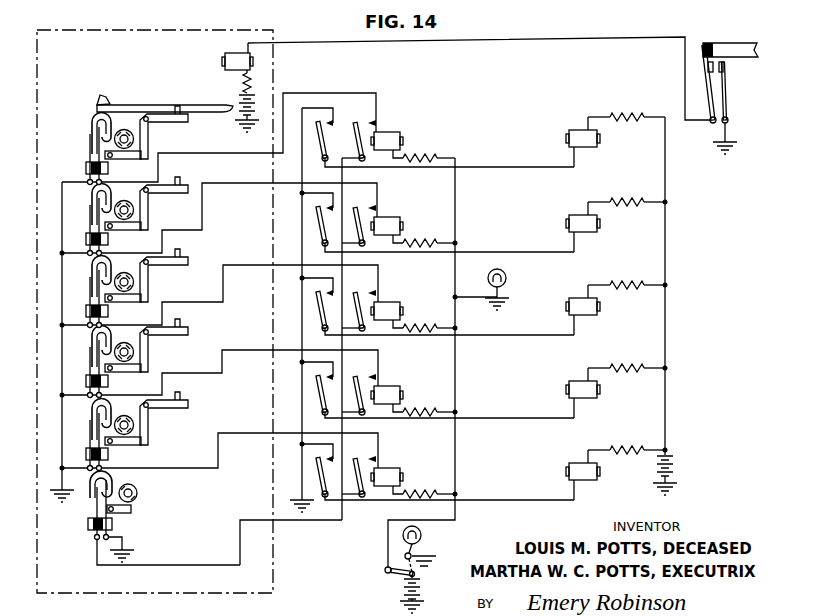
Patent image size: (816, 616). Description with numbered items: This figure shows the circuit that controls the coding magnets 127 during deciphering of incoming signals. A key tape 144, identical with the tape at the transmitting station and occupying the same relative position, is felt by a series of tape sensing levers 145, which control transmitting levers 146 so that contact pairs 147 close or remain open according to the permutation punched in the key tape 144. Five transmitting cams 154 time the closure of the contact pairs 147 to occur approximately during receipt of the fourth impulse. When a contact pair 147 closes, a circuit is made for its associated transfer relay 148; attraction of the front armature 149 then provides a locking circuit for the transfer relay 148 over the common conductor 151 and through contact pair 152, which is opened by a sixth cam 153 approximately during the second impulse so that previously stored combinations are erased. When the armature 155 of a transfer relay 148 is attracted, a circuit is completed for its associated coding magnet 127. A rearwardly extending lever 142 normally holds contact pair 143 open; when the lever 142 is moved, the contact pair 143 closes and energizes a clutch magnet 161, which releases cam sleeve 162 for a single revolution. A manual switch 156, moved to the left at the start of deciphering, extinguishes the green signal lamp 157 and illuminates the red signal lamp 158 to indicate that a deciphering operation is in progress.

The coding magnet 127 is at (578, 132).
The rearwardly extending lever 142 is at (738, 44).
The contact pair 143 is at (724, 70).
The key tape 144 is at (116, 106).
The tape sensing lever 145 is at (165, 125).
The transmitting lever 146 is at (96, 118).
The contact pair 147 is at (85, 147).
The transfer relay 148 is at (393, 138).
The front armature 149 is at (358, 125).
The common conductor 151 is at (262, 520).
The contact pair 152 is at (98, 500).
The sixth cam 153 is at (138, 490).
The transmitting cam 154 is at (100, 95).
The armature 155 is at (313, 124).
The manual switch 156 is at (392, 573).
The green signal lamp 157 is at (423, 537).
The red signal lamp 158 is at (505, 273).
The clutch magnet 161 is at (230, 55).
The cam sleeve 162 is at (132, 210).